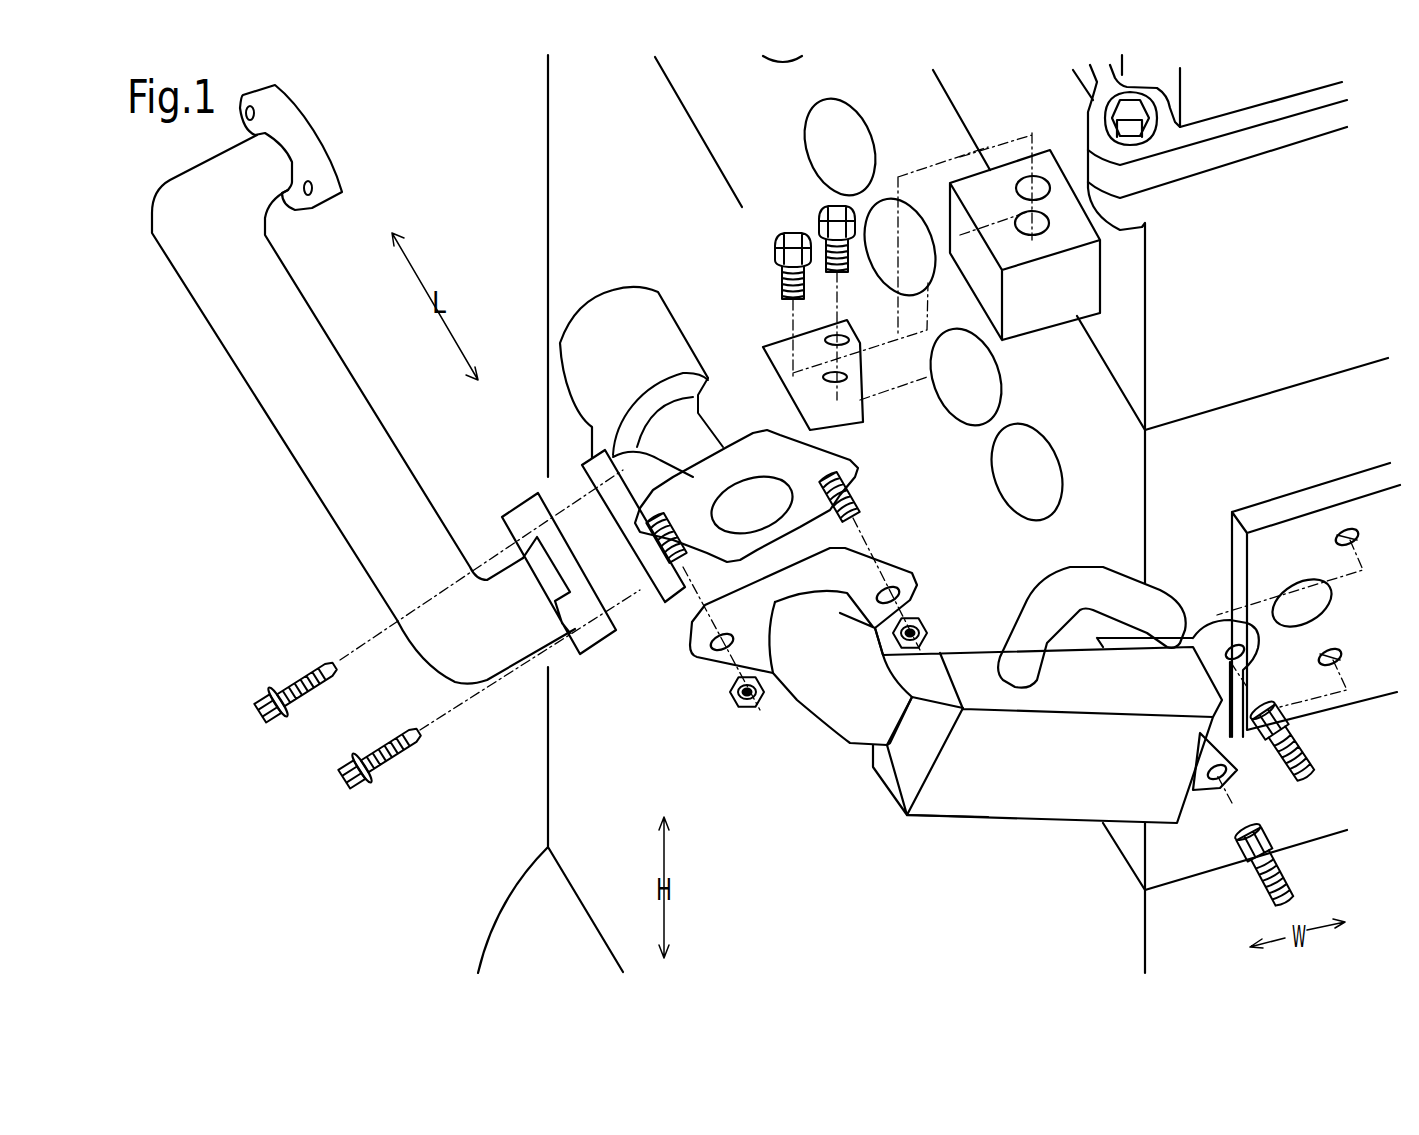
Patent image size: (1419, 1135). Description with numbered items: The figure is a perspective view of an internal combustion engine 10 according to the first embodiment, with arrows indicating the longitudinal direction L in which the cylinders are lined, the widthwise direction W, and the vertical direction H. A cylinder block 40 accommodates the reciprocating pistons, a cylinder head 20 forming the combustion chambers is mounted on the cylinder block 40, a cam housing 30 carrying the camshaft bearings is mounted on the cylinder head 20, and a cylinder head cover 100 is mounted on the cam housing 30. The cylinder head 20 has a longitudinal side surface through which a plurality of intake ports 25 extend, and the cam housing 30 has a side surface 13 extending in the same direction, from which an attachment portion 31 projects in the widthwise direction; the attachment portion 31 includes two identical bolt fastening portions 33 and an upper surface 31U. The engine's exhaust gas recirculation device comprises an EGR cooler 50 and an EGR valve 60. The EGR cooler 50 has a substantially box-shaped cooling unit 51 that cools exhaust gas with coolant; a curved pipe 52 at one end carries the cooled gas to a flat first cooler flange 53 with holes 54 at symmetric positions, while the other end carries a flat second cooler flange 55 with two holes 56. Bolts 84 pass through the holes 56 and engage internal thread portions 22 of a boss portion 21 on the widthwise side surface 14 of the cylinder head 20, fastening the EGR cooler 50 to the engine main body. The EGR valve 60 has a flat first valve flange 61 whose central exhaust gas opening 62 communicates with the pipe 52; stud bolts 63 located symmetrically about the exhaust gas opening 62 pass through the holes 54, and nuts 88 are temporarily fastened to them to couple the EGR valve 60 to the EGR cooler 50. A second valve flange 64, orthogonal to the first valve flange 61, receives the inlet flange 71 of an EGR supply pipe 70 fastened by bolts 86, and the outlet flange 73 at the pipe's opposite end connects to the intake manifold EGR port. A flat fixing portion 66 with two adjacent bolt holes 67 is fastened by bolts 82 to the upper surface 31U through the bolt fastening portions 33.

The internal combustion engine 10 is at (510, 122).
The side surface 13 is at (953, 102).
The side surface 14 is at (1307, 457).
The cylinder head 20 is at (1118, 477).
The boss portion 21 is at (1320, 540).
The internal thread portions 22 is at (1360, 538).
The intake ports 25 is at (770, 62).
The cam housing 30 is at (1233, 267).
The attachment portion 31 is at (1055, 293).
The upper surface 31U is at (950, 183).
The bolt fastening portions 33 is at (1042, 183).
The cylinder block 40 is at (582, 785).
The EGR cooler 50 is at (1060, 823).
The cooling unit 51 is at (977, 793).
The pipe 52 is at (840, 720).
The first cooler flange 53 is at (857, 582).
The holes 54 is at (900, 593).
The second cooler flange 55 is at (1207, 633).
The holes 56 is at (1262, 657).
The EGR valve 60 is at (590, 323).
The first valve flange 61 is at (705, 465).
The exhaust gas opening 62 is at (782, 510).
The stud bolts 63 is at (673, 547).
The second valve flange 64 is at (593, 465).
The fixing portion 66 is at (780, 350).
The bolt holes 67 is at (848, 338).
The EGR supply pipe 70 is at (345, 440).
The inlet flange 71 is at (520, 507).
The outlet flange 73 is at (327, 154).
The bolts 82 is at (793, 236).
The bolts 84 is at (1283, 738).
The bolts 86 is at (297, 672).
The nuts 88 is at (928, 628).
The cylinder head cover 100 is at (1238, 117).